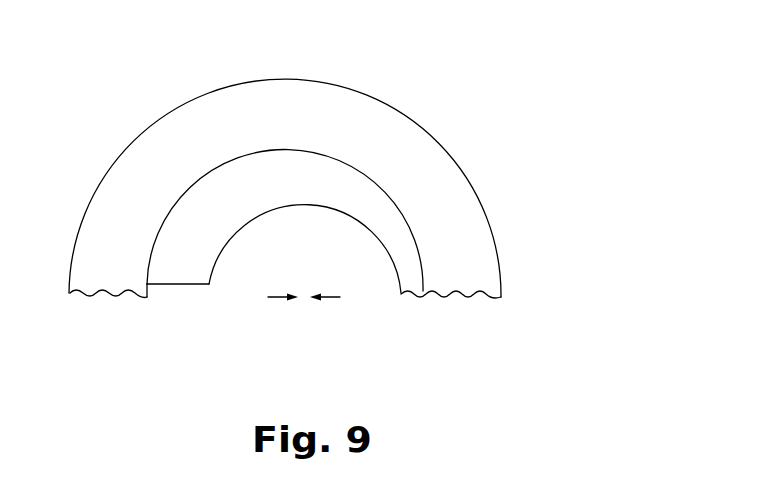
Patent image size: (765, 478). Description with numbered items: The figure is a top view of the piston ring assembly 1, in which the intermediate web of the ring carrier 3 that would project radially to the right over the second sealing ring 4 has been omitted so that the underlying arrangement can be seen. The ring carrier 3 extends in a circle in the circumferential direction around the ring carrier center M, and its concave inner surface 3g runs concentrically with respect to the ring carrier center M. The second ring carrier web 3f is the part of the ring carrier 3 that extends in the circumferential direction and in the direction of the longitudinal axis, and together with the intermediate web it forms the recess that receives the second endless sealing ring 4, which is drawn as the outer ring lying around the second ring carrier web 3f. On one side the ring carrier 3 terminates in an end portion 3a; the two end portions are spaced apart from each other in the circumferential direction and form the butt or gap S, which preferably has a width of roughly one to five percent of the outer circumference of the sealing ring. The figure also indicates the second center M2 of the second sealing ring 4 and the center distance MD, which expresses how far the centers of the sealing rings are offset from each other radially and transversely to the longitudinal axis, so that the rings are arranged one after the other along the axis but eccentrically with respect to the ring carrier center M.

The piston ring assembly 1 is at (317, 198).
The ring carrier 3 is at (291, 247).
The end portion 3a is at (155, 299).
The second ring carrier web 3f is at (385, 212).
The concave inner surface 3g is at (378, 250).
The second sealing ring 4 is at (477, 243).
The gap S is at (192, 292).
The second center M2 is at (297, 292).
The center distance MD is at (342, 299).
The ring carrier center M is at (317, 302).